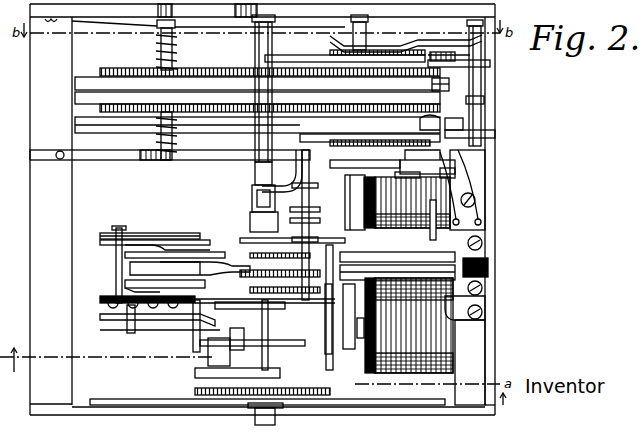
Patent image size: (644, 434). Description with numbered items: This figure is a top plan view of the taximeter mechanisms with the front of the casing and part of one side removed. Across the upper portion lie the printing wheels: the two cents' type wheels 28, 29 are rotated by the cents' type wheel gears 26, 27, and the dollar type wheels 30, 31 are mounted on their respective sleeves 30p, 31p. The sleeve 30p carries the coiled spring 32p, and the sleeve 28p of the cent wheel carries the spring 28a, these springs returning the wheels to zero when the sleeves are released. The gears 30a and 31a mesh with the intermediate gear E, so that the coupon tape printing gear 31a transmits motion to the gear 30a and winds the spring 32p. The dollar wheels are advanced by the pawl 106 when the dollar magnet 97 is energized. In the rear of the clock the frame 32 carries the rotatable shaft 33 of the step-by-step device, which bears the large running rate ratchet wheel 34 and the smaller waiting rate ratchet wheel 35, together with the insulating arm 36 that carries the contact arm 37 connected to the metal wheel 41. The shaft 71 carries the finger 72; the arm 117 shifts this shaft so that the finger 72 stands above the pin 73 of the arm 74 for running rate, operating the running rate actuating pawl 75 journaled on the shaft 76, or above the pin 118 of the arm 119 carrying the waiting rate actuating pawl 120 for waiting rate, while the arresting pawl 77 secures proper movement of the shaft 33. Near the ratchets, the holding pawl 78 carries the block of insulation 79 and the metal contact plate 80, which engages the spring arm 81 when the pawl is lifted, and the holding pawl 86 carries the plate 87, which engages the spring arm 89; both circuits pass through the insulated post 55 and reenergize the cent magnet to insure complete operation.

The finger 72 is at (268, 98).
The cent type wheel 29 is at (482, 104).
The coupon tape printing gear 31a is at (445, 60).
The dollar type wheel 31 is at (449, 84).
The sleeve 31p is at (362, 36).
The coiled spring 32p is at (173, 51).
The sleeve 30p is at (175, 29).
The dollar type wheel 30 is at (84, 78).
The gear 30a is at (122, 70).
The intermediate gear E is at (233, 70).
The cent type wheel 28 is at (92, 104).
The sleeve 28p is at (150, 118).
The cent type wheel gear 26 is at (257, 115).
The pawl 106 is at (292, 62).
The cent type wheel gear 27 is at (445, 120).
The spring 28a is at (160, 140).
The arm 117 is at (270, 150).
The shaft 71 is at (312, 208).
The waiting rate ratchet wheel 35 is at (253, 215).
The frame 32 is at (120, 226).
The waiting rate actuating pawl 120 is at (145, 232).
The pin 118 is at (185, 250).
The running rate actuating pawl 75 is at (215, 262).
The arm 119 is at (112, 252).
The pin 73 is at (125, 268).
The arm 74 is at (125, 280).
The arresting pawl 77 is at (185, 320).
The shaft 76 is at (131, 333).
The contact arm 37 is at (195, 352).
The arm of insulation 36 is at (208, 360).
The running rate ratchet wheel 34 is at (275, 310).
The metal ring or wheel 41 is at (240, 395).
The rotatable shaft 33 is at (335, 255).
The pawl or detent 78 is at (326, 282).
The insulated post 55 is at (409, 204).
The dollar magnet 97 is at (405, 325).
The spring arm 81 is at (485, 190).
The metal contact plate 80 is at (462, 160).
The spring arm 89 is at (476, 178).
The block of insulation 79 is at (482, 134).
The plate 87 is at (455, 115).
The holding pawl 86 is at (548, 117).